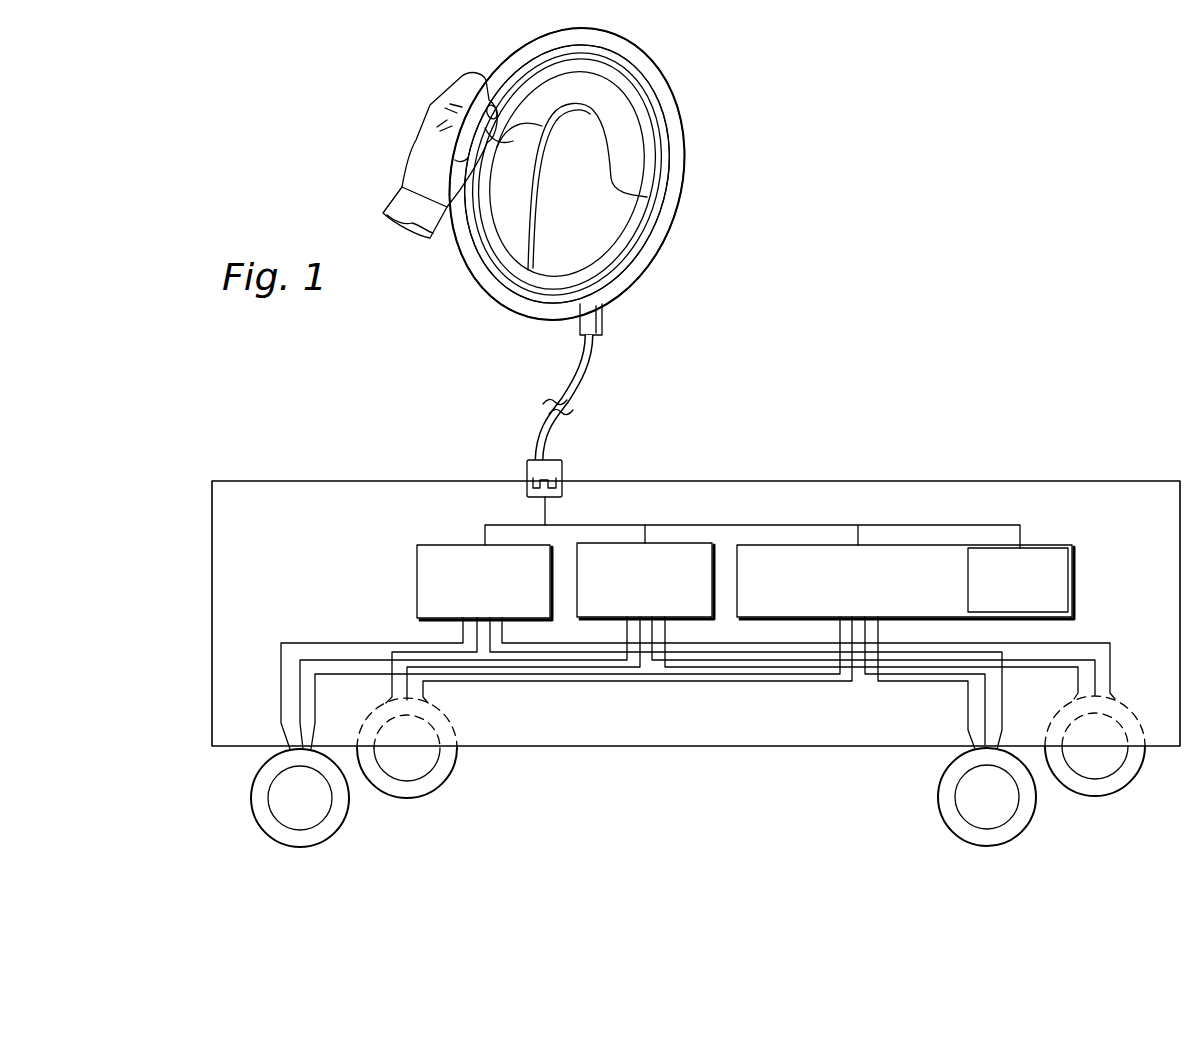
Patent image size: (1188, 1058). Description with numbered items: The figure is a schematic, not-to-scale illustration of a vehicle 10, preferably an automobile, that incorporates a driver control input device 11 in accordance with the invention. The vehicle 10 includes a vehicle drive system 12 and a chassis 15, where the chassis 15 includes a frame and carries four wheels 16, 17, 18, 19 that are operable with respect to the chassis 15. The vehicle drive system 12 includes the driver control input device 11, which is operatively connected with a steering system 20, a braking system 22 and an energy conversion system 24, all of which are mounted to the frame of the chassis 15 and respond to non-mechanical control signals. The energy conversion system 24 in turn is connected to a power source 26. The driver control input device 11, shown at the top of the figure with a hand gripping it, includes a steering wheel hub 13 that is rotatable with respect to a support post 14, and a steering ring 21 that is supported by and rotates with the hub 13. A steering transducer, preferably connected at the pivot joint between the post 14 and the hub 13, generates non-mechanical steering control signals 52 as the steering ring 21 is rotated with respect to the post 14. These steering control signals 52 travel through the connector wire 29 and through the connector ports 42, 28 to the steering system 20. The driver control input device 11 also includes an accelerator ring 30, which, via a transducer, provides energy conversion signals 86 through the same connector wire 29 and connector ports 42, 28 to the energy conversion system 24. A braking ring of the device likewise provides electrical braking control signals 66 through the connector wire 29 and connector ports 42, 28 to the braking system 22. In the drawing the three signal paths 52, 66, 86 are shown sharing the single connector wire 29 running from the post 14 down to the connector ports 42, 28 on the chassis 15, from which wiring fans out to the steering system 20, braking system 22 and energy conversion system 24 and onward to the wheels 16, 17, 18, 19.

The vehicle 10 is at (886, 137).
The driver control input device 11 is at (702, 121).
The vehicle drive system 12 is at (863, 295).
The steering wheel hub 13 is at (593, 87).
The support post 14 is at (602, 312).
The chassis 15 is at (1062, 481).
The wheel 16 is at (251, 795).
The wheel 17 is at (438, 791).
The wheel 18 is at (936, 791).
The wheel 19 is at (1120, 787).
The steering system 20 is at (437, 545).
The steering ring 21 is at (687, 172).
The braking system 22 is at (678, 543).
The energy conversion system 24 is at (797, 545).
The power source 26 is at (987, 548).
The connector port 28 is at (559, 460).
The connector wire 29 is at (615, 397).
The accelerator ring 30 is at (653, 93).
The connector port 42 is at (536, 459).
The steering control signals 52 is at (632, 397).
The braking control signals 66 is at (632, 397).
The energy conversion signals 86 is at (583, 388).